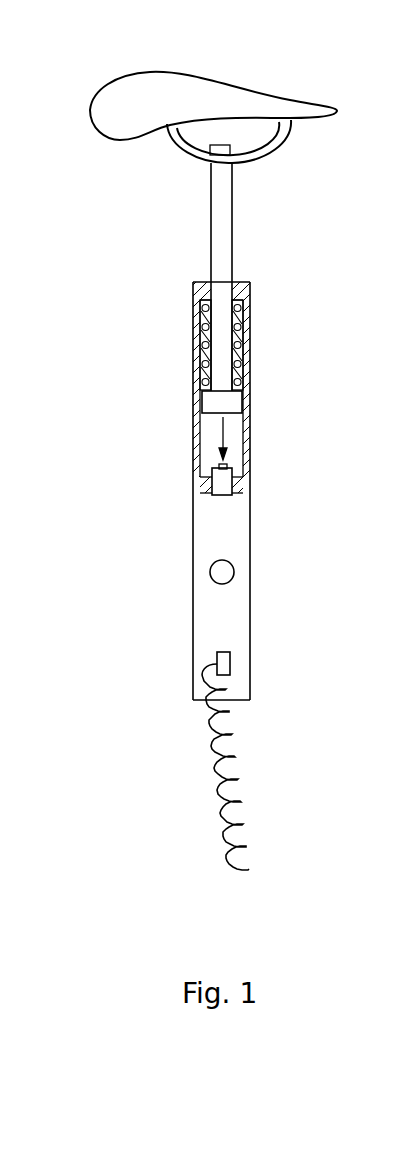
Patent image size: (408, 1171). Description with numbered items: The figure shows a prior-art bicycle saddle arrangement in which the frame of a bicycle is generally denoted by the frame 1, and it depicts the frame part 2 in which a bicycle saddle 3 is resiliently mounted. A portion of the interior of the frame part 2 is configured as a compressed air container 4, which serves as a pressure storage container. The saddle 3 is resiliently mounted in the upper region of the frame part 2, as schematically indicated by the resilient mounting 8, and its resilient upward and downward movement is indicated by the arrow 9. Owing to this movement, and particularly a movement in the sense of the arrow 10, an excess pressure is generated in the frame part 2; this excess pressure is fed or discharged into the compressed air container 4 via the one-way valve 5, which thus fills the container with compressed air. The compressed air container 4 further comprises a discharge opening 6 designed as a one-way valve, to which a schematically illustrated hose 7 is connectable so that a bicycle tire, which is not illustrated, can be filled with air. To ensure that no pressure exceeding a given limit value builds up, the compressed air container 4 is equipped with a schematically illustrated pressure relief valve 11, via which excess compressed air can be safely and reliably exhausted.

The frame 1 is at (112, 349).
The frame part 2 is at (198, 382).
The bicycle saddle 3 is at (177, 98).
The compressed air container 4 is at (220, 615).
The valve 5 is at (225, 492).
The discharge opening 6 is at (230, 663).
The hose 7 is at (233, 758).
The resilient mounting 8 is at (248, 355).
The arrow 9 is at (168, 288).
The arrow 10 is at (222, 427).
The pressure relief valve 11 is at (217, 575).